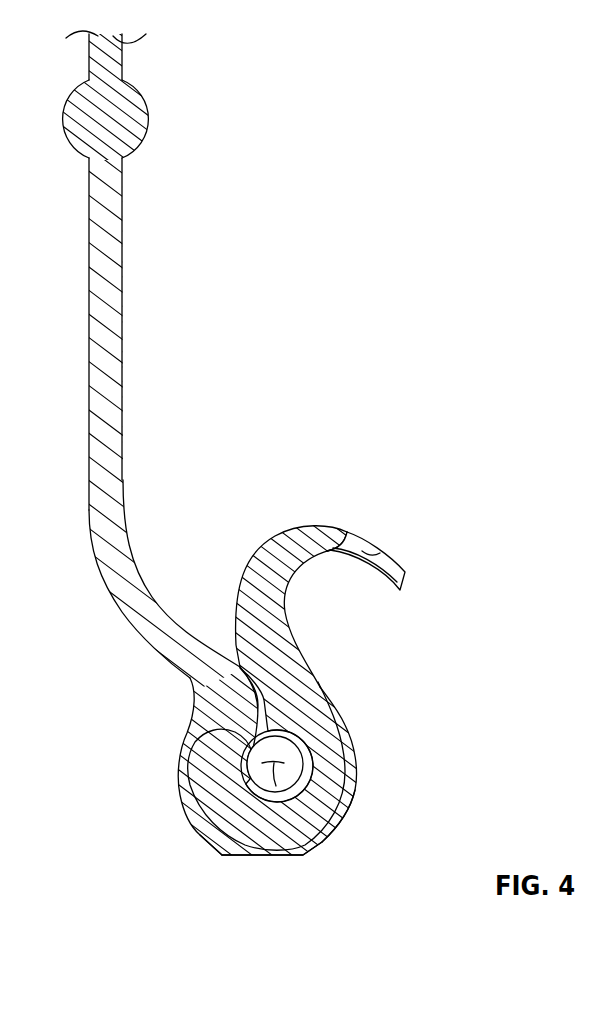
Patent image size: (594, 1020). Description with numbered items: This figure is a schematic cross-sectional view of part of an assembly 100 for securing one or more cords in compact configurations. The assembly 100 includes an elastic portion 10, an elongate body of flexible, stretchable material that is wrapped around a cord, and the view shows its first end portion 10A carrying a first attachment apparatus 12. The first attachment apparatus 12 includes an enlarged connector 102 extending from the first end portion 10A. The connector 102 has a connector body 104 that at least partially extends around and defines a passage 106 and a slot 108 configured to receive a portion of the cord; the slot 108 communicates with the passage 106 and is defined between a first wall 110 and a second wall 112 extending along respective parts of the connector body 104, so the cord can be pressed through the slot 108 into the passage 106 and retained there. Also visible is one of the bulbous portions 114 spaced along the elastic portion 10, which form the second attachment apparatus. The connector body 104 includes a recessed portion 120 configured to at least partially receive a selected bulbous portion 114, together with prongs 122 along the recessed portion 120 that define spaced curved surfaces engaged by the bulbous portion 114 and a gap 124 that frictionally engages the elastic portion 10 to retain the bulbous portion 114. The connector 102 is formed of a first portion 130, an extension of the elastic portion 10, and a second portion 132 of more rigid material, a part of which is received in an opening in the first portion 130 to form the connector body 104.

The elastic portion 10 is at (123, 240).
The first end portion 10A is at (123, 613).
The first attachment apparatus 12 is at (407, 679).
The assembly 100 is at (270, 412).
The connector 102 is at (85, 778).
The connector body 104 is at (352, 819).
The passage 106 is at (320, 848).
The slot 108 is at (233, 660).
The first wall 110 is at (258, 701).
The second wall 112 is at (266, 700).
The bulbous portion 114 is at (137, 117).
The recessed portion 120 is at (312, 566).
The prongs 122 is at (405, 569).
The gap 124 is at (372, 550).
The first portion 130 is at (200, 840).
The second portion 132 is at (347, 773).